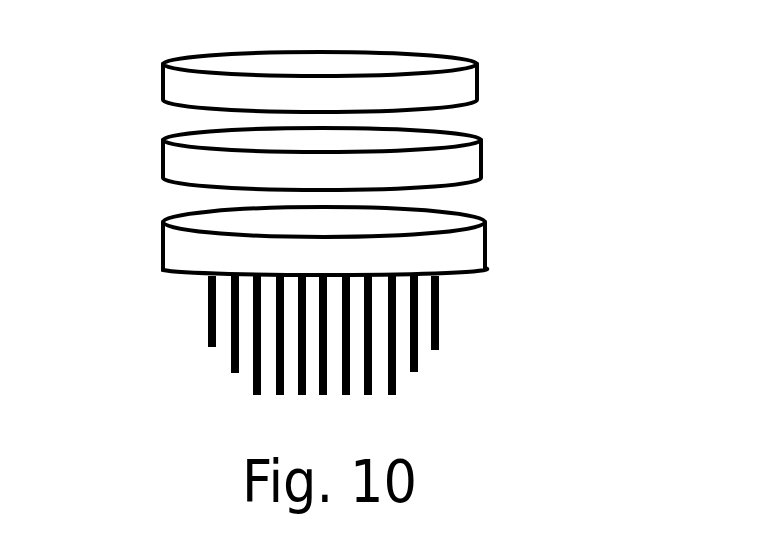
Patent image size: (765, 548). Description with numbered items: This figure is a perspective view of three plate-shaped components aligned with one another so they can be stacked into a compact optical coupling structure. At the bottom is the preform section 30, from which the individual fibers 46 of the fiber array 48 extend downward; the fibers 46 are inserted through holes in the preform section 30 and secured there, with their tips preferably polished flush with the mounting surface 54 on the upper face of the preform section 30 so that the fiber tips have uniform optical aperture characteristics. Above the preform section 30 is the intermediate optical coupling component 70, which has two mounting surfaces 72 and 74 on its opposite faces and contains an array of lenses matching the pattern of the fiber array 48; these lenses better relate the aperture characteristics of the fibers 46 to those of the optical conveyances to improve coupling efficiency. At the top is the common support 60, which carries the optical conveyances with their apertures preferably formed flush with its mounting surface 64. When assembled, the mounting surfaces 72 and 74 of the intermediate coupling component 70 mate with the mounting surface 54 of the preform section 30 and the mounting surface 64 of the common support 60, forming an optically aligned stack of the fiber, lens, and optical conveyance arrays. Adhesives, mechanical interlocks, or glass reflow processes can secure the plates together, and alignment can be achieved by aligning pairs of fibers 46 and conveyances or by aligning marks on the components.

The common support 60 is at (483, 72).
The mounting surface 64 is at (448, 105).
The intermediate optical coupling component 70 is at (480, 155).
The mounting surface 72 is at (236, 146).
The mounting surface 74 is at (211, 186).
The preform section 30 is at (164, 250).
The mounting surface 54 is at (436, 221).
The fibers 46 is at (208, 337).
The fiber array 48 is at (450, 333).